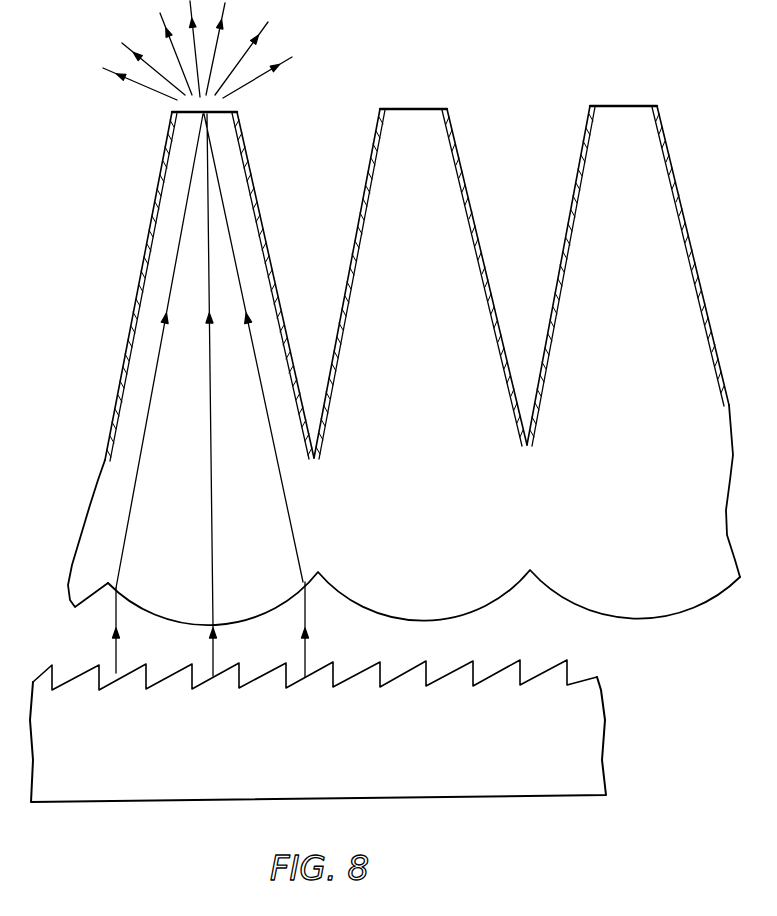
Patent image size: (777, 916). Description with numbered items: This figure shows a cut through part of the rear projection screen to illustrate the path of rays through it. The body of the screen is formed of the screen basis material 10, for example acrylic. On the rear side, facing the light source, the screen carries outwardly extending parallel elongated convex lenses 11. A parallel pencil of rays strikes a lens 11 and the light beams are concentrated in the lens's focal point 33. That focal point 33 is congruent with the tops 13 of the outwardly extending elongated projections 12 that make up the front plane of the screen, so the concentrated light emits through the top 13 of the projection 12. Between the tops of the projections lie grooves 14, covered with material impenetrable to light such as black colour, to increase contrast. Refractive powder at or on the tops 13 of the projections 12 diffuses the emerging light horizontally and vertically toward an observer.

The screen basis material 10 is at (432, 522).
The convex lenses 11 is at (485, 607).
The elongated projections 12 is at (420, 255).
The tops of projections 13 is at (420, 108).
The grooves 14 is at (470, 185).
The focal point 33 is at (205, 117).